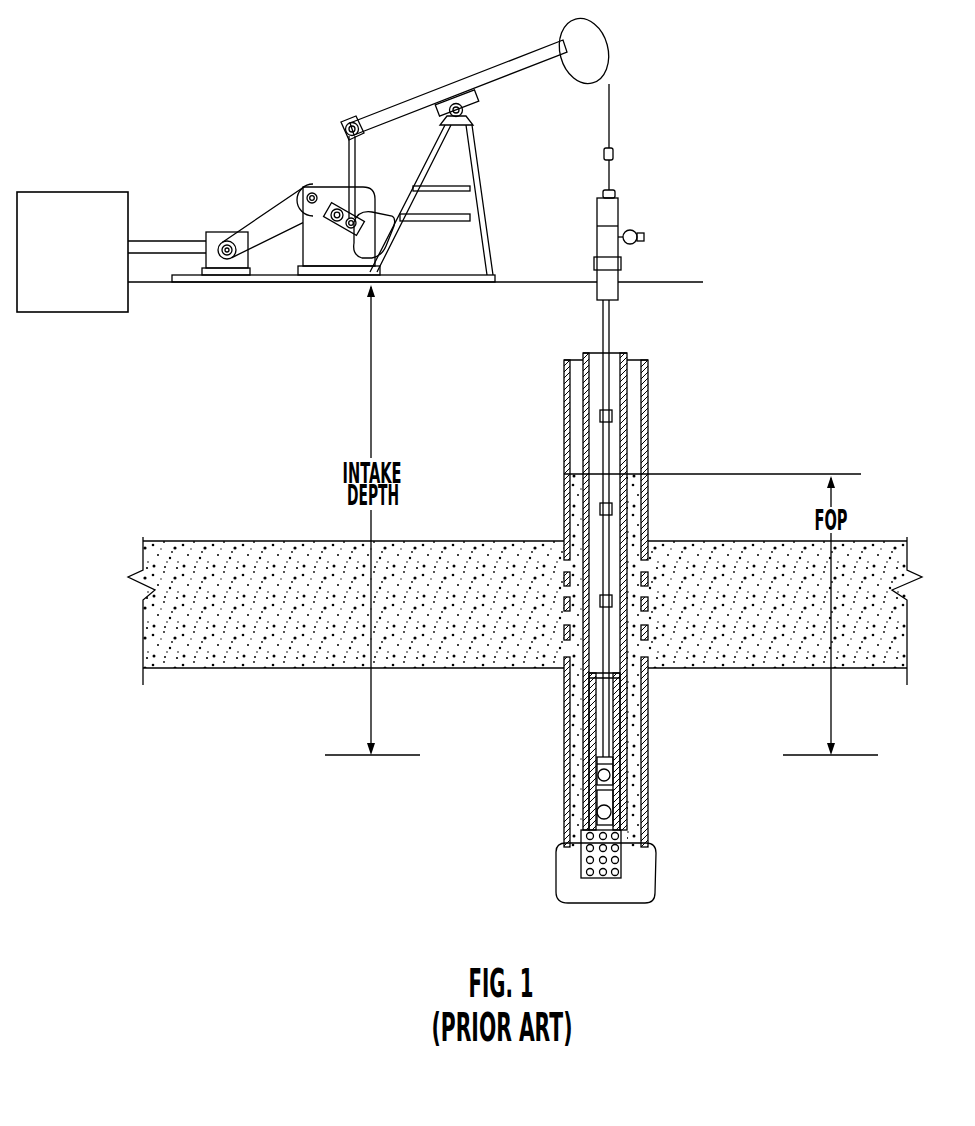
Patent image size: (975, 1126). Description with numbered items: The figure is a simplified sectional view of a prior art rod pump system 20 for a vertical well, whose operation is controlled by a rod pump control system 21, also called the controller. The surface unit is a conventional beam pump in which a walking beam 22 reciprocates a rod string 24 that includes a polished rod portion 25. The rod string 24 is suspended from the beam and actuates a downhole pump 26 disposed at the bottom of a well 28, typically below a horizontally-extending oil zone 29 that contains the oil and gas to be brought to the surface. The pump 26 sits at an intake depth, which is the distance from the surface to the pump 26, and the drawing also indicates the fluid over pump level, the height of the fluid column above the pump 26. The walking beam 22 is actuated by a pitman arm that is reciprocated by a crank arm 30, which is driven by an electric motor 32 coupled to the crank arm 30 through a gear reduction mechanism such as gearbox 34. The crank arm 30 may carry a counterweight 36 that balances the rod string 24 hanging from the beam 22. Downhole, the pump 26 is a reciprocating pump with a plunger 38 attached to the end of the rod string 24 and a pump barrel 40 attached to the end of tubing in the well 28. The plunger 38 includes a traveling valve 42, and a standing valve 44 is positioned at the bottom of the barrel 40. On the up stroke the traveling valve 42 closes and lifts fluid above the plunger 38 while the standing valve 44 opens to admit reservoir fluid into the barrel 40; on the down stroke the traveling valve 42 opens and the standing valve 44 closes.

The rod pump system 20 is at (348, 72).
The rod pump control system 21 is at (84, 276).
The walking beam 22 is at (440, 92).
The rod string 24 is at (592, 560).
The polished rod portion 25 is at (611, 160).
The downhole pump 26 is at (634, 796).
The well 28 is at (641, 882).
The oil zone 29 is at (160, 625).
The crank arm 30 is at (332, 172).
The electric motor 32 is at (212, 232).
The gearbox 34 is at (603, 53).
The counterweight 36 is at (353, 276).
The plunger 38 is at (611, 766).
The pump barrel 40 is at (622, 730).
The traveling valve 42 is at (598, 772).
The standing valve 44 is at (611, 812).